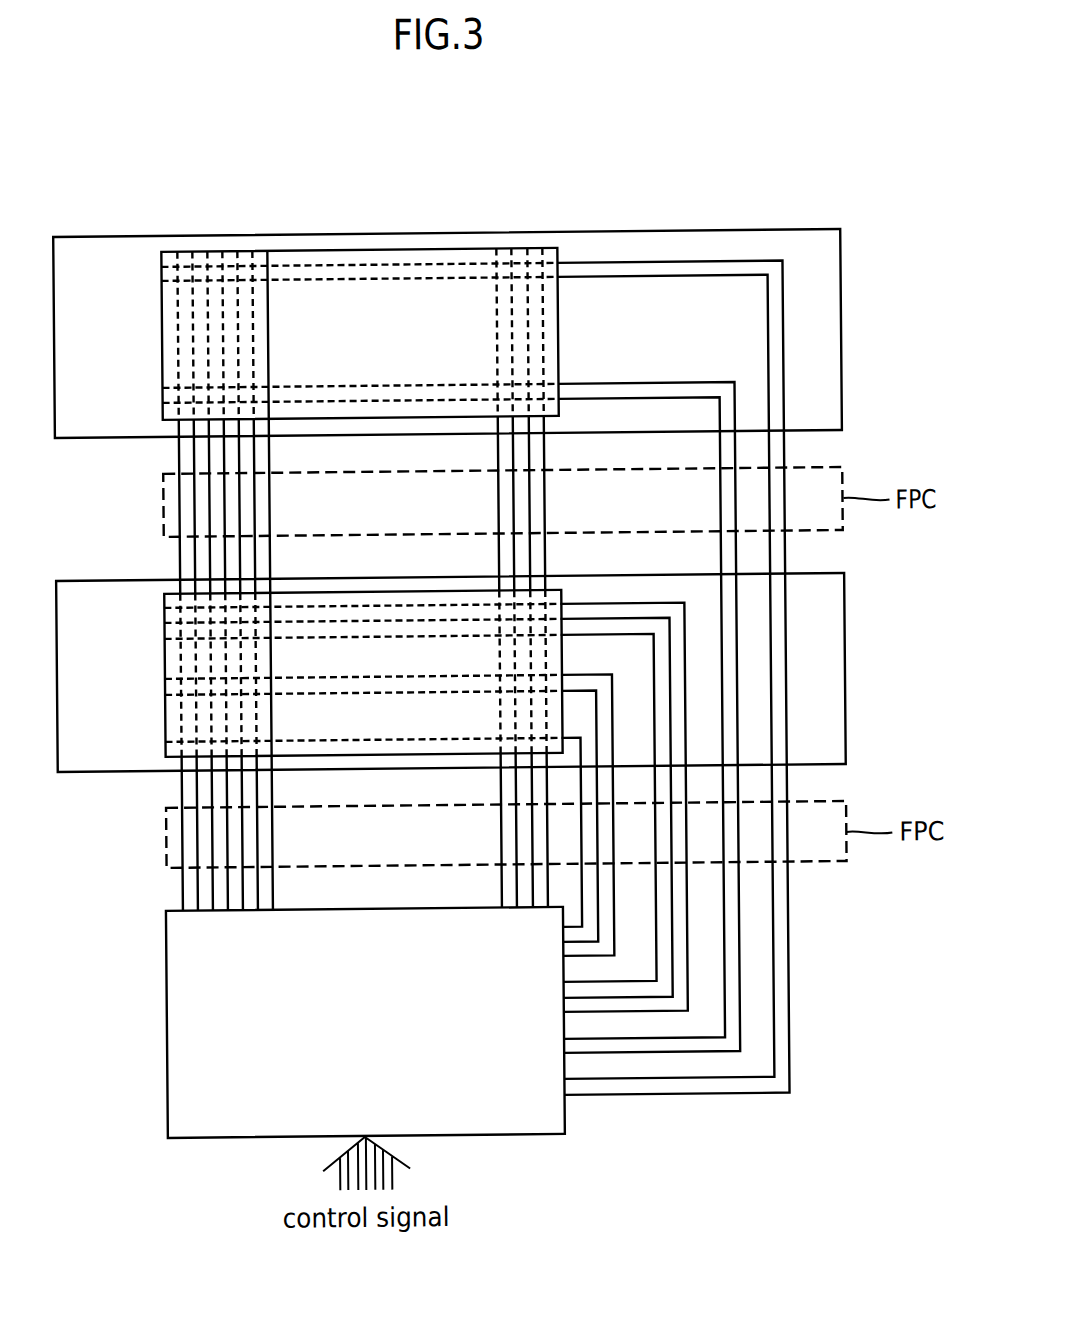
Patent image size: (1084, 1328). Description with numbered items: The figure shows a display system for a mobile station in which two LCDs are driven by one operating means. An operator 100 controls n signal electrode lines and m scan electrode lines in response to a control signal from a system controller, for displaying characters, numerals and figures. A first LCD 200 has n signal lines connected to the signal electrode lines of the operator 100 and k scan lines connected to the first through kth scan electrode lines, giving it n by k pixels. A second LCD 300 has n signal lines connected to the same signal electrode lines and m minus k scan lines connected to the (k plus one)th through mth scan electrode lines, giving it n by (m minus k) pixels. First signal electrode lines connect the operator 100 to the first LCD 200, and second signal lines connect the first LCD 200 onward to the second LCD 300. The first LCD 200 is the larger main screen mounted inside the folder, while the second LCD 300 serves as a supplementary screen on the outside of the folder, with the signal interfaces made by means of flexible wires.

The operator 100 is at (180, 1020).
The first LCD 200 is at (845, 682).
The second LCD 300 is at (456, 233).